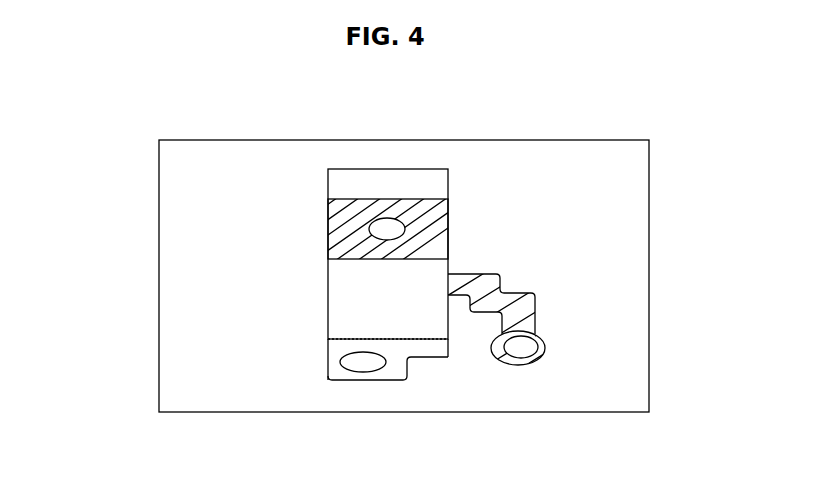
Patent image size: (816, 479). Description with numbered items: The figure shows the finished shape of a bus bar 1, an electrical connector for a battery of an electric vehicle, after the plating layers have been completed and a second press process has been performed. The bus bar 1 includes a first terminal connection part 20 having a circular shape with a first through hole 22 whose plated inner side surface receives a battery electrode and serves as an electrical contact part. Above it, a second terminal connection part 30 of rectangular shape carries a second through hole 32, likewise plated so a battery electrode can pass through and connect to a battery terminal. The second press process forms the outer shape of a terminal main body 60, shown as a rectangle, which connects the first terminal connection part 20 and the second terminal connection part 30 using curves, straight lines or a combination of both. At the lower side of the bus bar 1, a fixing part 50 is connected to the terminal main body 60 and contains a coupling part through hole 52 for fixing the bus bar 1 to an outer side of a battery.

The bus bar 1 is at (512, 218).
The first terminal connection part 20 is at (547, 348).
The first through hole 22 is at (523, 347).
The second terminal connection part 30 is at (393, 222).
The second through hole 32 is at (388, 228).
The fixing part 50 is at (393, 373).
The coupling part through hole 52 is at (358, 366).
The terminal main body 60 is at (355, 318).